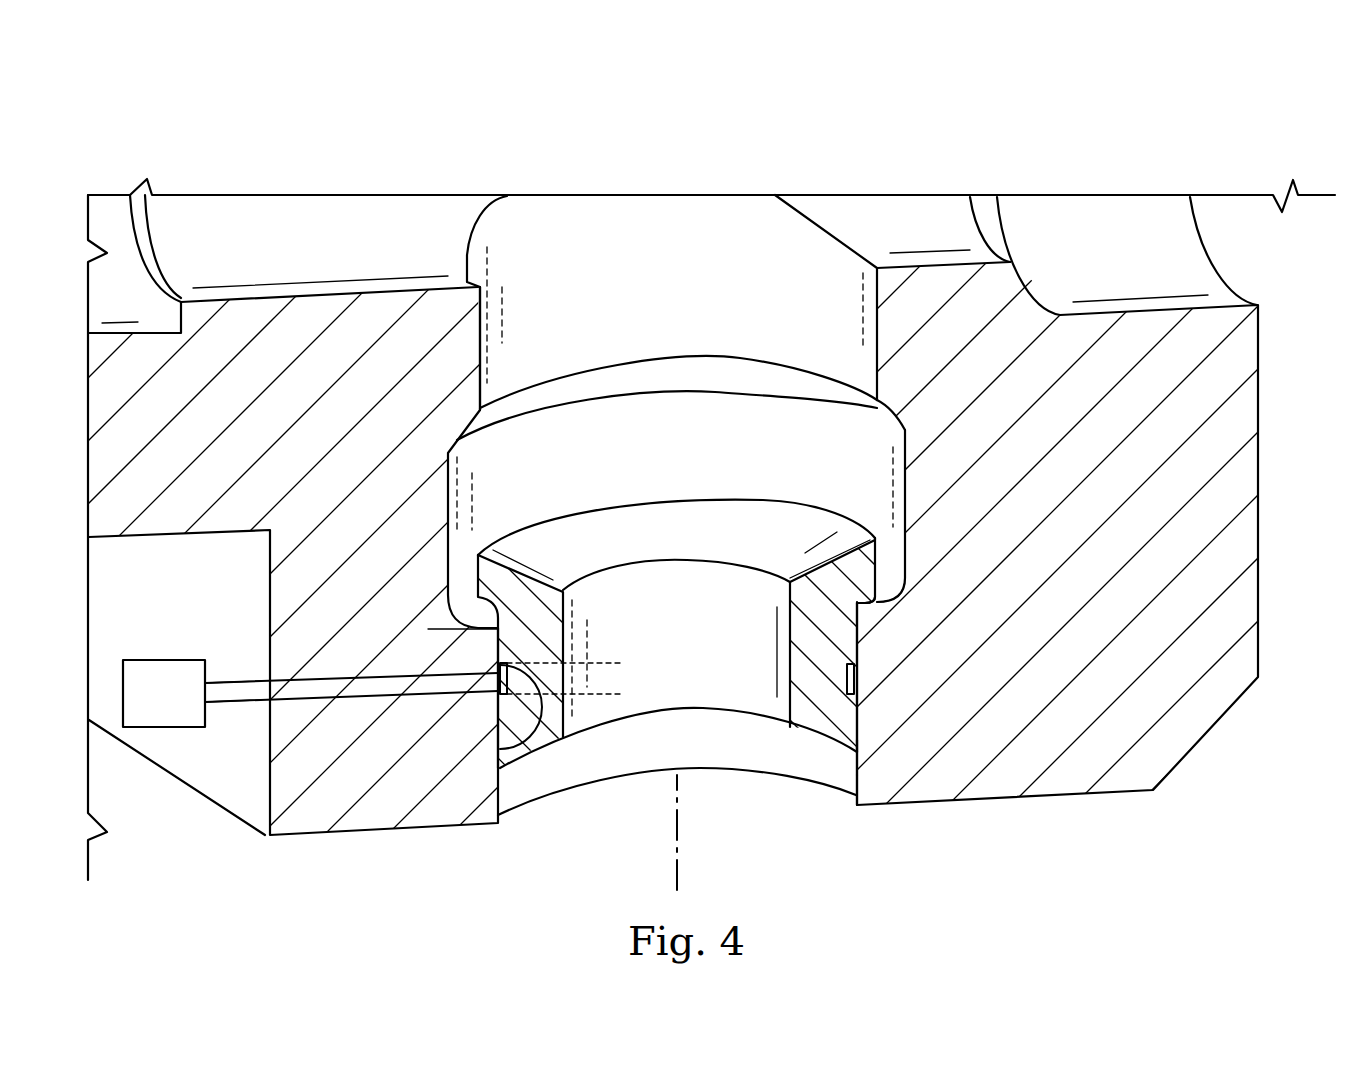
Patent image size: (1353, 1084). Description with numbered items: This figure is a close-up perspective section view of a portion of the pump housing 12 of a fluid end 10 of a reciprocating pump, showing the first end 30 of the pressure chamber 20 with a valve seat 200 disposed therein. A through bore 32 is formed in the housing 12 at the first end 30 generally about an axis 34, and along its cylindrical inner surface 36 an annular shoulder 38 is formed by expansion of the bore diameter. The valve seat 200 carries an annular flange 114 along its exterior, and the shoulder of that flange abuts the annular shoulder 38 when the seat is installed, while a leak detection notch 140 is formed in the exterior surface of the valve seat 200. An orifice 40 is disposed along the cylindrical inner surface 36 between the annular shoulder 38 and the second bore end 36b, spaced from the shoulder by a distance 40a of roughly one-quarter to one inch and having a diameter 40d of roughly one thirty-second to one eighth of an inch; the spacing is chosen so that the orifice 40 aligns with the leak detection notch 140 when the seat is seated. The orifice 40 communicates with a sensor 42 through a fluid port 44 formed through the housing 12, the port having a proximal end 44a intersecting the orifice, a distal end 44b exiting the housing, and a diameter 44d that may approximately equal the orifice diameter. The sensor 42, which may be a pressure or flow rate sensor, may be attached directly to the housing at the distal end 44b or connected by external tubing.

The fluid end portion 10 is at (1066, 101).
The housing 12 is at (1240, 360).
The pressure chamber 20 is at (603, 214).
The first end 30 is at (608, 424).
The through bore 32 is at (853, 790).
The axis 34 is at (680, 800).
The cylindrical inner surface 36 is at (644, 768).
The second bore end 36b is at (853, 756).
The annular shoulder 38 is at (868, 616).
The orifice 40 is at (495, 684).
The distance 40a is at (441, 627).
The diameter 40d is at (605, 725).
The sensor 42 is at (152, 729).
The fluid port 44 is at (323, 690).
The proximal end 44a is at (540, 705).
The distal end 44b is at (257, 706).
The diameter 44d is at (257, 679).
The annular flange 114 is at (888, 573).
The leak detection notch 140 is at (841, 679).
The valve seat 200 is at (764, 528).